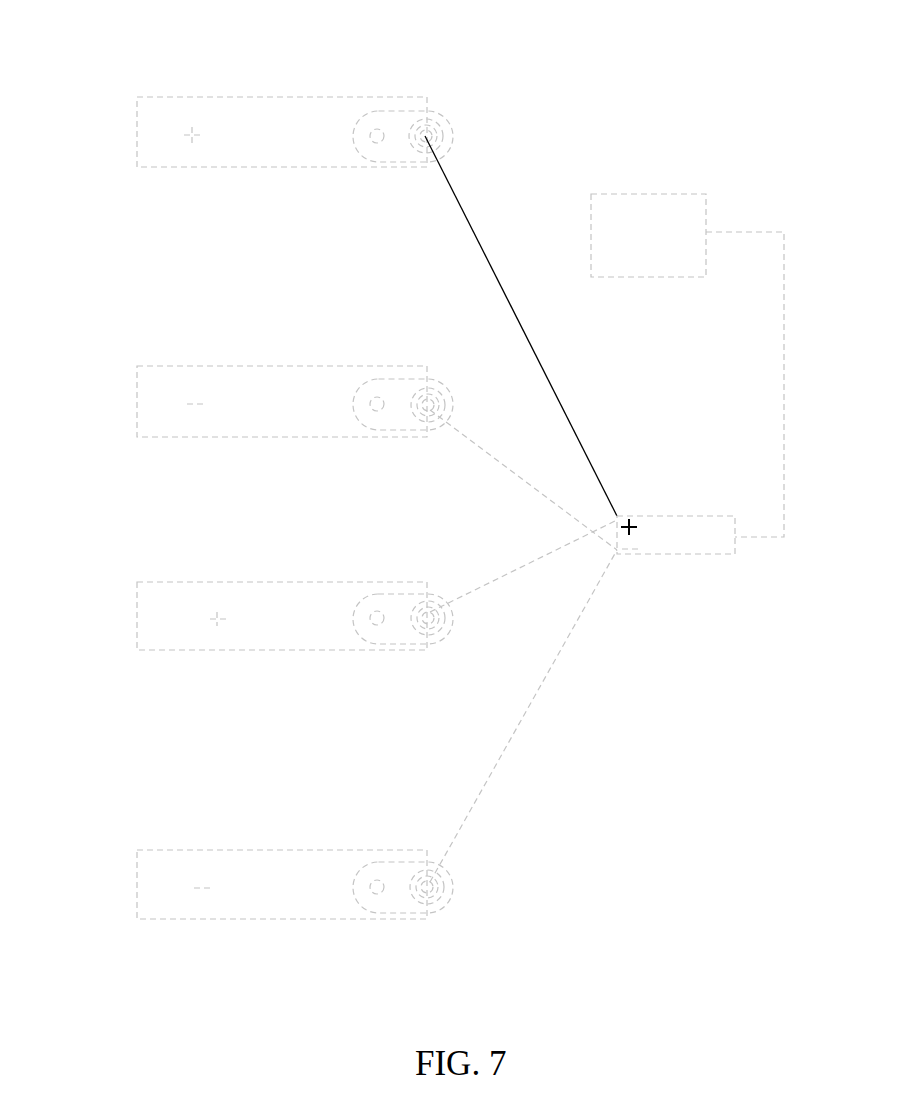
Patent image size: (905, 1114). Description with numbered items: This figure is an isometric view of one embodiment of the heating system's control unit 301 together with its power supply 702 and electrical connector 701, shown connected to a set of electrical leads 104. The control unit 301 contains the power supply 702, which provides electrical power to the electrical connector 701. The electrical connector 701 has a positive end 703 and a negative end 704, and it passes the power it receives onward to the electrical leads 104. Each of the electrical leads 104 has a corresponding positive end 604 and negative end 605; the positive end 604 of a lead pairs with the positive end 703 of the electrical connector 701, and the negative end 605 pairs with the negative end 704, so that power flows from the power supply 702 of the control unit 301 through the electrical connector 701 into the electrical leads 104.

The electrical leads 104 is at (141, 128).
The positive end 604 is at (197, 140).
The negative end 605 is at (201, 409).
The power supply 702 is at (650, 231).
The control unit 301 is at (702, 257).
The electrical connector 701 is at (678, 540).
The positive end 703 is at (633, 523).
The negative end 704 is at (635, 550).